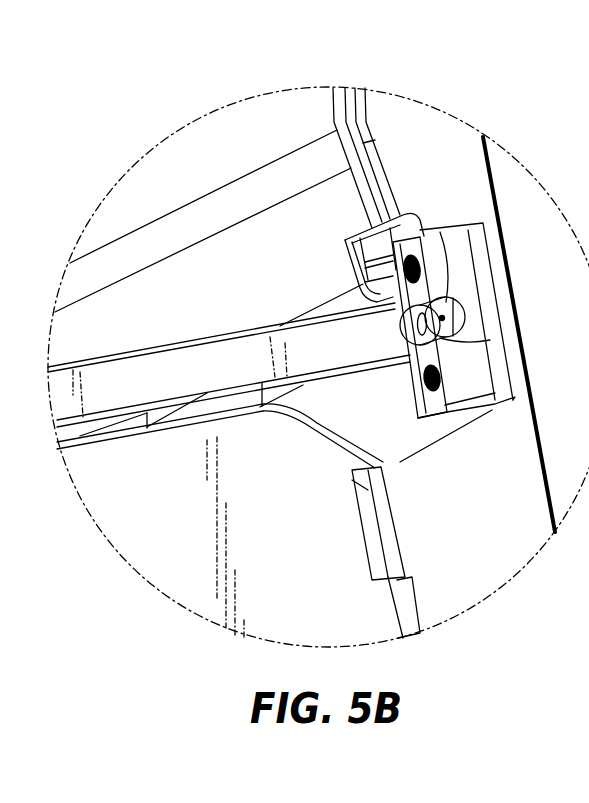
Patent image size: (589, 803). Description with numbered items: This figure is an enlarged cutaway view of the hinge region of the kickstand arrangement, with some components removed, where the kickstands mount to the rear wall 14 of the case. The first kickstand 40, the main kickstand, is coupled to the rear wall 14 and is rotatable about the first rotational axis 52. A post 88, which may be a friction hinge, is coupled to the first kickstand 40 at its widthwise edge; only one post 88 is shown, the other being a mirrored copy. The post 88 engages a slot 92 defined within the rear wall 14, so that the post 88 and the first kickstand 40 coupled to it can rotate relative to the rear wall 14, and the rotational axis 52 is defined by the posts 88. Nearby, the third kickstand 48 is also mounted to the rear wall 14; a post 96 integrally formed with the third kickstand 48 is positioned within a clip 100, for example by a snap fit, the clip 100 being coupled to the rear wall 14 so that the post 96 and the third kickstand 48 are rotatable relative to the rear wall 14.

The rear wall 14 is at (300, 120).
The first kickstand 40 is at (105, 378).
The third kickstand 48 is at (203, 580).
The first rotational axis 52 is at (445, 300).
The post 88 is at (447, 230).
The slot 92 is at (447, 332).
The post 96 is at (387, 507).
The clip 100 is at (0, 617).